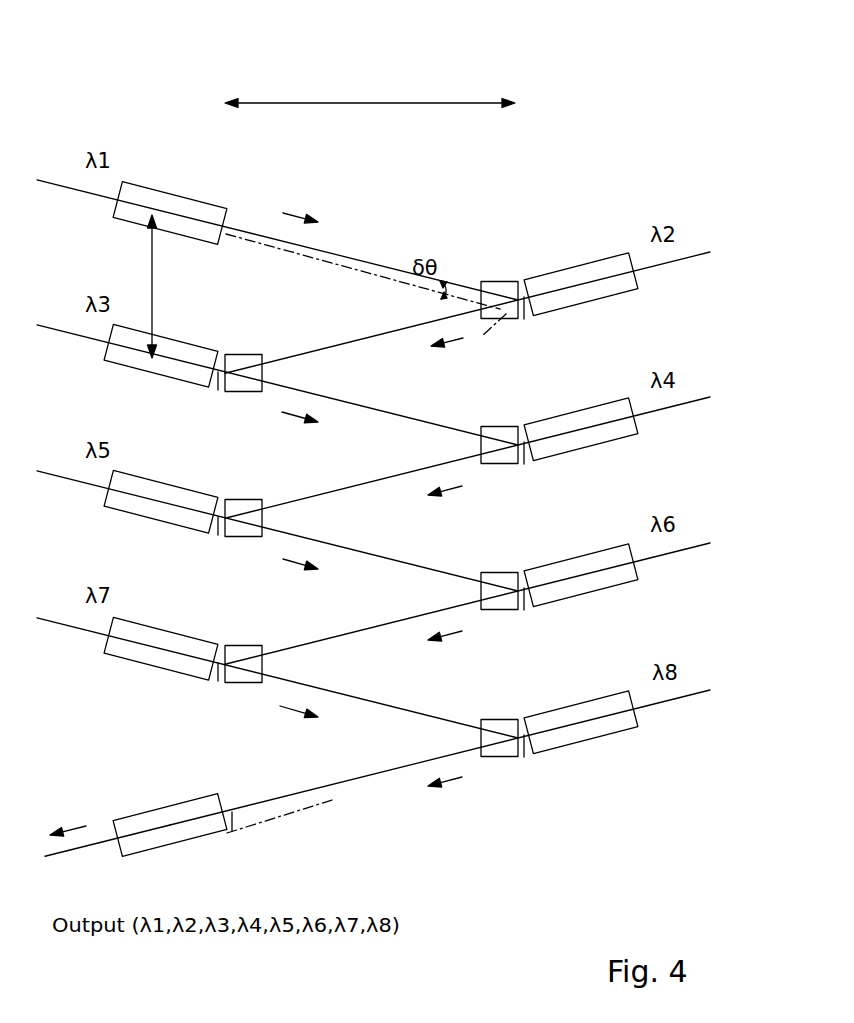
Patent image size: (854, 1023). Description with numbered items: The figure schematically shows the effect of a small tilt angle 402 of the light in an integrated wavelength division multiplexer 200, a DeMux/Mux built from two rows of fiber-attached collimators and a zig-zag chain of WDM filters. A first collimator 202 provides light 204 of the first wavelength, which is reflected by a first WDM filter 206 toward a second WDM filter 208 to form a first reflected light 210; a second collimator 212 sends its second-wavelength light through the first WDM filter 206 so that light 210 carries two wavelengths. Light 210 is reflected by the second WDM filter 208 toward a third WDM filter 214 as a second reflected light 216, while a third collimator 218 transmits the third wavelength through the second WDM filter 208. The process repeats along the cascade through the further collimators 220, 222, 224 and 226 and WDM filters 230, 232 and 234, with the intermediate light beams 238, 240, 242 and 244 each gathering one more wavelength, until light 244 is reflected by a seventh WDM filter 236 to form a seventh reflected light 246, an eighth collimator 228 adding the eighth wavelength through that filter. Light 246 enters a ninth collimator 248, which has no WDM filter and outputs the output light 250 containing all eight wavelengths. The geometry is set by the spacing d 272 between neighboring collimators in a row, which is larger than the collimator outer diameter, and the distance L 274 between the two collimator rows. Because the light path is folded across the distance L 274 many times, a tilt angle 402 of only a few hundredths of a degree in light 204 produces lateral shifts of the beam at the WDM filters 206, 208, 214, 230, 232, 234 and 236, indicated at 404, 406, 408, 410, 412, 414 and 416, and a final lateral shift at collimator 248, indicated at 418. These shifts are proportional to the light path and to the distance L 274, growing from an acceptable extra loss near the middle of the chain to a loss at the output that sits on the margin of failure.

The integrated wavelength division multiplexer 200 is at (166, 43).
The first collimator 202 is at (170, 194).
The light 204 is at (345, 256).
The first WDM filter 206 is at (507, 281).
The second WDM filter 208 is at (246, 354).
The first reflected light 210 is at (345, 343).
The second collimator 212 is at (576, 268).
The third WDM filter 214 is at (507, 426).
The second reflected light 216 is at (416, 418).
The third collimator 218 is at (170, 341).
The fourth collimator 220 is at (574, 412).
The fifth collimator 222 is at (170, 487).
The sixth collimator 224 is at (574, 558).
The collimator 226 is at (170, 634).
The eighth collimator 228 is at (574, 704).
The WDM filter 230 is at (246, 500).
The WDM filter 232 is at (507, 573).
The WDM filter 234 is at (246, 648).
The seventh WDM filter 236 is at (507, 719).
The combined beam 238 is at (342, 490).
The combined beam 240 is at (415, 563).
The reflected light 242 is at (342, 636).
The light 244 is at (415, 710).
The seventh reflected light 246 is at (337, 784).
The ninth collimator 248 is at (170, 802).
The output light 250 is at (84, 849).
The spacing d 272 is at (155, 300).
The distance L 274 is at (380, 100).
The tilt angle δθ 402 is at (448, 282).
The offset δd1 404 is at (524, 308).
The offset δd2 406 is at (217, 380).
The offset δd3 408 is at (524, 453).
The offset δd4 410 is at (217, 525).
The offset δd5 412 is at (524, 599).
The offset δd6 414 is at (217, 671).
The offset δd7 416 is at (524, 746).
The offset δd8 418 is at (233, 822).